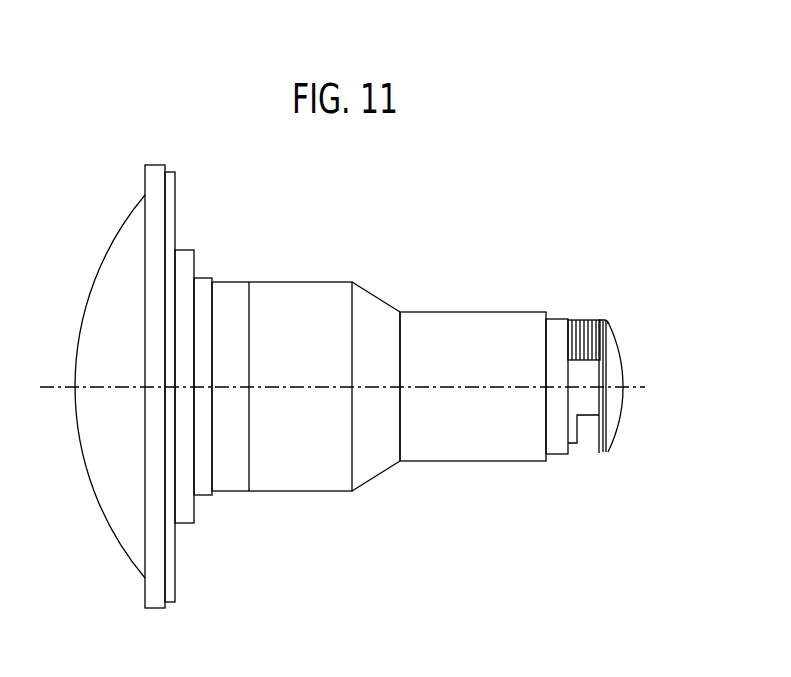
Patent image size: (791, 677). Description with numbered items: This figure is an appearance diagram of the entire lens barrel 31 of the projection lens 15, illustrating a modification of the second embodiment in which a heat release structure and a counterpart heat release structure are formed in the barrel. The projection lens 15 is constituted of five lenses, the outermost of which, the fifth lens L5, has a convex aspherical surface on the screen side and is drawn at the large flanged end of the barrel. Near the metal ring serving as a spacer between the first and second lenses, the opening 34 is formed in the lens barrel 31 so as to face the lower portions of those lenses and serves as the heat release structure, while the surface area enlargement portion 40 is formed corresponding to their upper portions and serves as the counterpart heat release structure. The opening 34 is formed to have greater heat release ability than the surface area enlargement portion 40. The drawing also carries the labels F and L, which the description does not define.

The projection lens 15 is at (351, 386).
The lens barrel 31 is at (478, 306).
The thread portion F is at (592, 320).
The surface area enlargement portion 40 is at (603, 308).
The opening 34 is at (596, 432).
The optical axis L is at (650, 387).
The fifth lens L5 is at (102, 258).